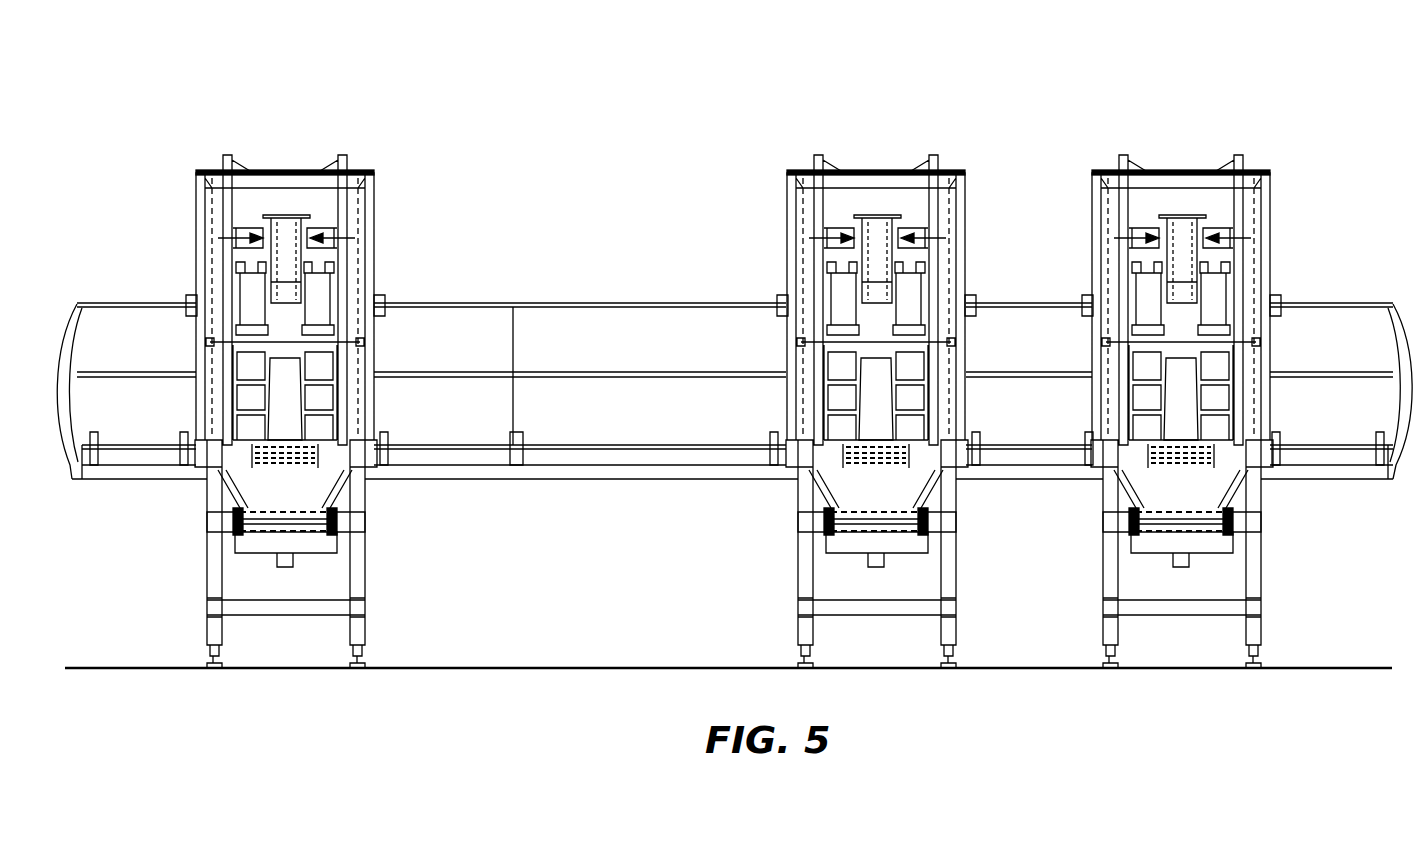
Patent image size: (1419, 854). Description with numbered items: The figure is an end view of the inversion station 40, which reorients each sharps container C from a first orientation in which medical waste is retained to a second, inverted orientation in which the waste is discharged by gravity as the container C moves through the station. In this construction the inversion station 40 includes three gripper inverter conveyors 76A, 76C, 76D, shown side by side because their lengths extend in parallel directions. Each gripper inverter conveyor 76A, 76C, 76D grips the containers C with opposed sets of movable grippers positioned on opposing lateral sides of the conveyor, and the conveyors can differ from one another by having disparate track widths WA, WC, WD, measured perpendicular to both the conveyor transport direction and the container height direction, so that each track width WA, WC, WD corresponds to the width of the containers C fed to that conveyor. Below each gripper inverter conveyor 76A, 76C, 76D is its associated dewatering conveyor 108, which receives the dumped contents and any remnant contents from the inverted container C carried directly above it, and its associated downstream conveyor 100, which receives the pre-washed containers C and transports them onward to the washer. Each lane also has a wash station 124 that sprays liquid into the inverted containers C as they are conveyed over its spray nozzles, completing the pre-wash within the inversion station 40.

The inversion station 40 is at (298, 88).
The container C is at (290, 222).
The gripper inverter conveyor 76A is at (327, 222).
The gripper inverter conveyor 76C is at (881, 383).
The gripper inverter conveyor 76D is at (1188, 383).
The track width WA is at (345, 228).
The track width WC is at (915, 219).
The track width WD is at (1223, 219).
The wash station 124 is at (297, 453).
The dewatering conveyor 108 is at (257, 532).
The downstream conveyor 100 is at (270, 468).